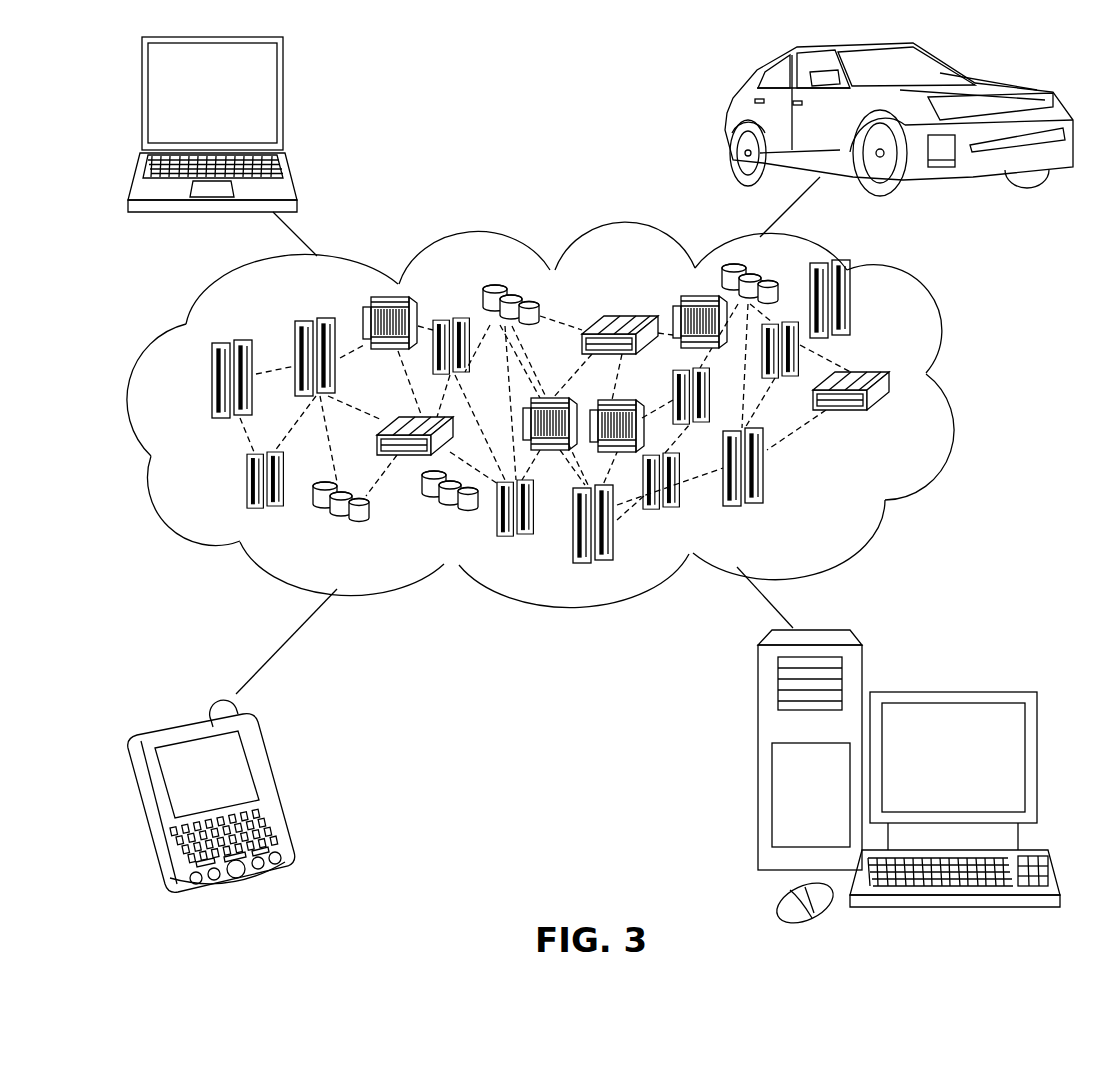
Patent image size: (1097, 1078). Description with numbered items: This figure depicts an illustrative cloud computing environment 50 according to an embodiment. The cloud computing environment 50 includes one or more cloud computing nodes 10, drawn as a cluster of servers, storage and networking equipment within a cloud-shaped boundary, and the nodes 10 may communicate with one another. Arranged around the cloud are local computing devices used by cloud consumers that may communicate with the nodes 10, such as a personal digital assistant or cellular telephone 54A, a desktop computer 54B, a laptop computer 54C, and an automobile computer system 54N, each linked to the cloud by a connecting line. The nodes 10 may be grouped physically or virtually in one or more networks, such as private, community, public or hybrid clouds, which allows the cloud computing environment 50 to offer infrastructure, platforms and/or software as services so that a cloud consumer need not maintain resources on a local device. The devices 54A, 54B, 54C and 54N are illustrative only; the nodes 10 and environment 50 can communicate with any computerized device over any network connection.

The cloud computing node 10 is at (900, 425).
The cloud computing environment 50 is at (950, 389).
The personal digital assistant or cellular telephone 54A is at (272, 787).
The desktop computer 54B is at (950, 691).
The laptop computer 54C is at (283, 100).
The automobile computer system 54N is at (728, 120).